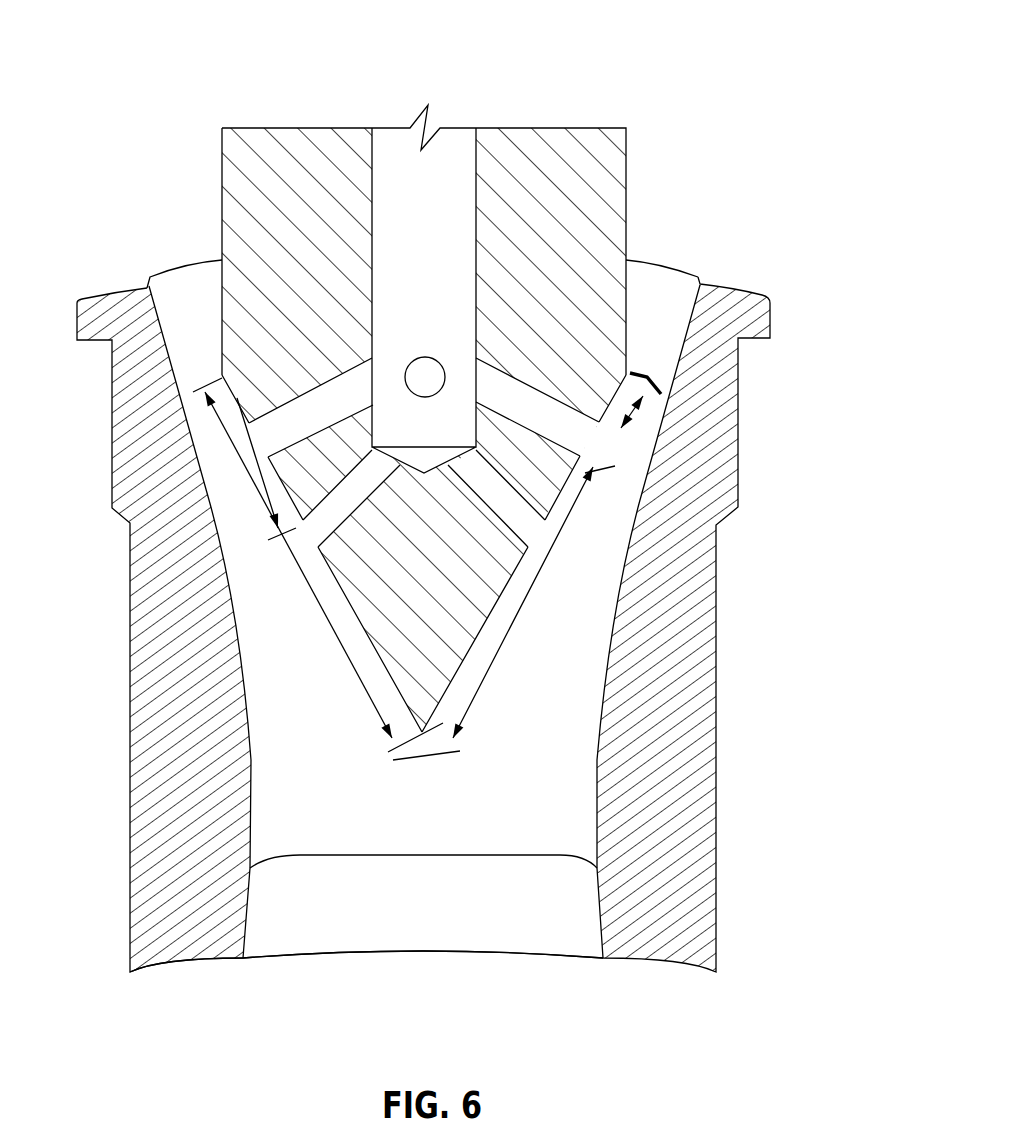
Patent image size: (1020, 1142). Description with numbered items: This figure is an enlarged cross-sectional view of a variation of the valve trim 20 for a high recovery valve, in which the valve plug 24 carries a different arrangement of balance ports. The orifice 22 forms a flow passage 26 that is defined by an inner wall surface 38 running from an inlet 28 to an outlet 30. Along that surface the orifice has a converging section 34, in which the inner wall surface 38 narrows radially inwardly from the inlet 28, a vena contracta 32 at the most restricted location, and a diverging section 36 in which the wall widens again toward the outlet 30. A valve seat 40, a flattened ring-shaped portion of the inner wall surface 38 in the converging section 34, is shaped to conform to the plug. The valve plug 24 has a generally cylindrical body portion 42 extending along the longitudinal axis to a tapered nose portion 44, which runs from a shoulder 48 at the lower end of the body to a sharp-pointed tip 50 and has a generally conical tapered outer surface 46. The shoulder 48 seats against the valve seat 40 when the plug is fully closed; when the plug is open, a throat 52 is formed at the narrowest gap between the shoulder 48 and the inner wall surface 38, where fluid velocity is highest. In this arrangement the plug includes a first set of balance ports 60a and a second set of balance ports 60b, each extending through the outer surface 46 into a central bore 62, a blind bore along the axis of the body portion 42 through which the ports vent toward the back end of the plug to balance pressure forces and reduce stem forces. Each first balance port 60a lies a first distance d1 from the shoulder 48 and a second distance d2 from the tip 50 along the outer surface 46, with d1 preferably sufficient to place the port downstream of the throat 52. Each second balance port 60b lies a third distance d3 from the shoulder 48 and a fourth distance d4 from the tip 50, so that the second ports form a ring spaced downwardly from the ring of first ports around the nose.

The valve trim 20 is at (578, 70).
The orifice 22 is at (441, 627).
The valve plug 24 is at (428, 468).
The flow passage 26 is at (407, 809).
The inlet 28 is at (184, 263).
The outlet 30 is at (272, 958).
The vena contracta 32 is at (565, 856).
The converging section 34 is at (662, 312).
The diverging section 36 is at (561, 958).
The inner wall surface 38 is at (437, 948).
The valve seat 40 is at (300, 500).
The body portion 42 is at (220, 173).
The tapered nose portion 44 is at (378, 594).
The tapered outer surface 46 is at (527, 592).
The shoulder 48 is at (220, 377).
The tip 50 is at (395, 745).
The throat 52 is at (645, 380).
The first balance ports 60a is at (427, 357).
The second balance ports 60b is at (300, 555).
The central bore 62 is at (393, 157).
The first distance d1 is at (625, 430).
The second distance d2 is at (505, 625).
The third distance d3 is at (262, 477).
The fourth distance d4 is at (340, 648).